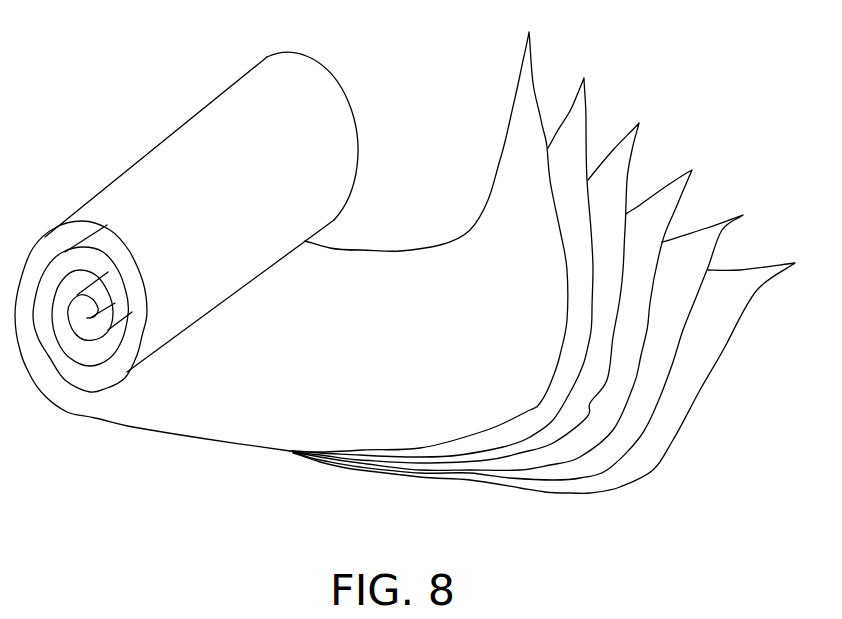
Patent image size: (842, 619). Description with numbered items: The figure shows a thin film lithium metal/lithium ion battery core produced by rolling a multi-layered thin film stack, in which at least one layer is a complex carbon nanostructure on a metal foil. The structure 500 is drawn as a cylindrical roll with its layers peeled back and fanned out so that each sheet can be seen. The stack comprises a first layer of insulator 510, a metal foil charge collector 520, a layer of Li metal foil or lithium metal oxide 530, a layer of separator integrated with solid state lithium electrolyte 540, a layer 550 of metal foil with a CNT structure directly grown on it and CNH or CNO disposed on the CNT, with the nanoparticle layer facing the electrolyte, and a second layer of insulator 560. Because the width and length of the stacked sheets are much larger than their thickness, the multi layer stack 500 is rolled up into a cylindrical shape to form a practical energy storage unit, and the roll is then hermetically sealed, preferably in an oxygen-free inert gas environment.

The multi-layered energy storage structure 500 is at (205, 63).
The first layer of insulator 510 is at (772, 267).
The metal foil charge collector 520 is at (722, 227).
The layer of Li metal foil or lithium metal oxide 530 is at (672, 197).
The layer of separator integrated with solid state lithium electrolyte 540 is at (627, 147).
The layer of metal foil with CNT structure 550 is at (575, 107).
The second layer of insulator 560 is at (522, 67).